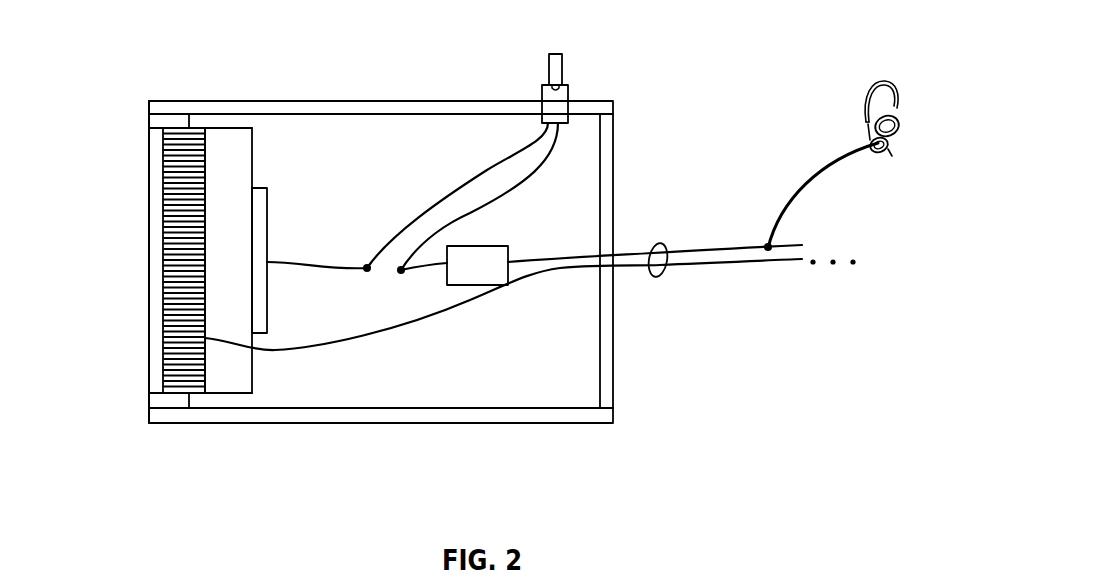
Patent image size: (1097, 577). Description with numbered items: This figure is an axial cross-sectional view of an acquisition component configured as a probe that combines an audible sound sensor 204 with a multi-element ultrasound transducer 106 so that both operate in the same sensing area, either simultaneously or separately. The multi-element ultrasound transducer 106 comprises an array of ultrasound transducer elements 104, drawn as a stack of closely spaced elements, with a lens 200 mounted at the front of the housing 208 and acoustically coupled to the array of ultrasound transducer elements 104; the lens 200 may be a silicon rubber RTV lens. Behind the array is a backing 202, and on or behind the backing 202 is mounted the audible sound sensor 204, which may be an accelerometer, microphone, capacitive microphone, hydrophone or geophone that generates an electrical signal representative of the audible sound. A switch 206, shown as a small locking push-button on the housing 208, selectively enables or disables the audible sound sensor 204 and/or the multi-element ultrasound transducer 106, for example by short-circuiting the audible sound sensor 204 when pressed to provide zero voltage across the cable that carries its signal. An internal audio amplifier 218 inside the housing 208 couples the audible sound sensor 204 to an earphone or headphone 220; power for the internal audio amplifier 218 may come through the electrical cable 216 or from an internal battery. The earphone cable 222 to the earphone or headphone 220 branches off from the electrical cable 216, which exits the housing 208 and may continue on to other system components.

The ultrasound transducer elements 104 is at (168, 146).
The multi-element ultrasound transducer 106 is at (168, 252).
The lens 200 is at (157, 257).
The backing 202 is at (237, 368).
The audible sound sensor 204 is at (260, 288).
The switch 206 is at (563, 86).
The housing 208 is at (417, 100).
The electrical cable 216 is at (665, 243).
The internal audio amplifier 218 is at (498, 278).
The earphone or headphone 220 is at (868, 82).
The earphone cable 222 is at (830, 158).